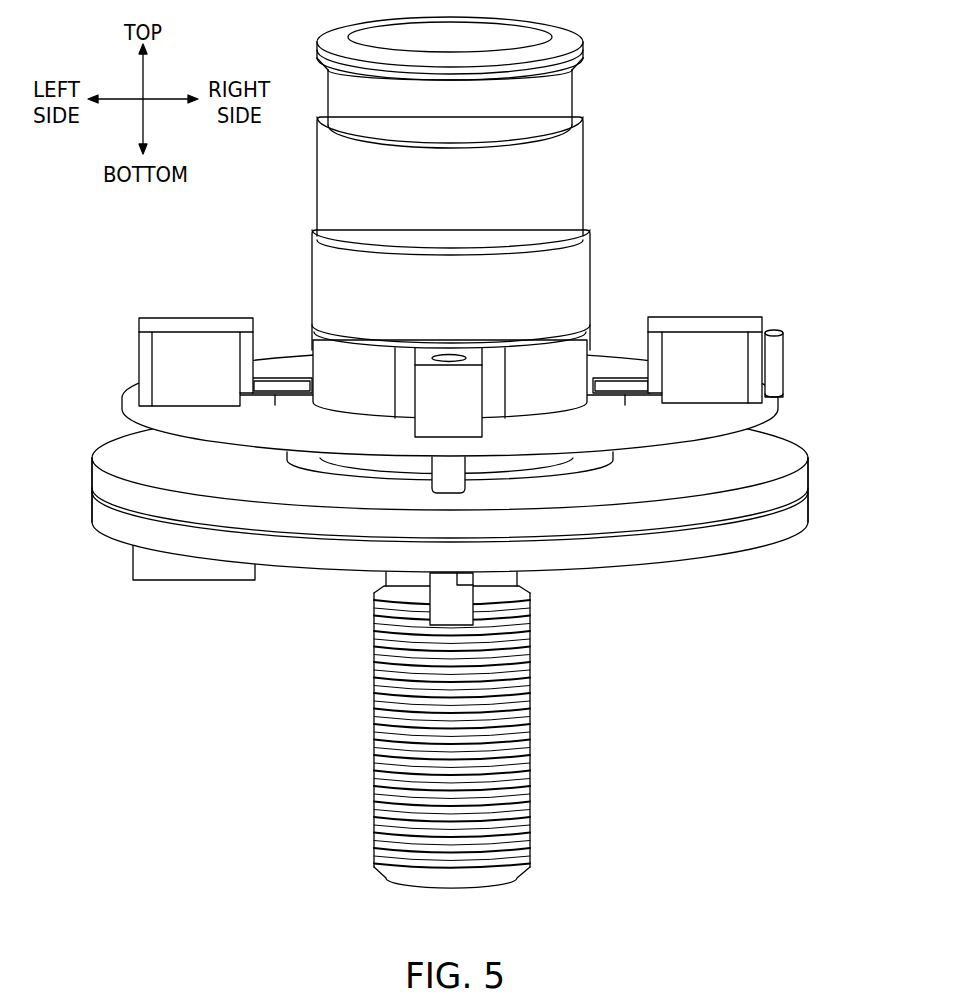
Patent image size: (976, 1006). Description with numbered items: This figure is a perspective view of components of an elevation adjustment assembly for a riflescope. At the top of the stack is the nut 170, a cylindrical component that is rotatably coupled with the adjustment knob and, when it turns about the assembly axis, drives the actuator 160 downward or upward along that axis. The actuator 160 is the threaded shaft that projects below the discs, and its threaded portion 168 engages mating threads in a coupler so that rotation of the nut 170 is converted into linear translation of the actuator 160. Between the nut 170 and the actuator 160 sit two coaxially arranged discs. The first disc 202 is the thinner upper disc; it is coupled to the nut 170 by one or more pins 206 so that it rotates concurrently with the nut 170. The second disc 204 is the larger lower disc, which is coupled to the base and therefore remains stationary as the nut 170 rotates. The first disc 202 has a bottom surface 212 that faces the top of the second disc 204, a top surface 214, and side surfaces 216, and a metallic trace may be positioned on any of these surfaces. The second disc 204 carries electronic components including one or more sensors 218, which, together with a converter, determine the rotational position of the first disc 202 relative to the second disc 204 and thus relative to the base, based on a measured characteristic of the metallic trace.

The actuator 160 is at (466, 730).
The threaded portion 168 is at (540, 778).
The nut 170 is at (548, 173).
The first disc 202 is at (796, 431).
The second disc 204 is at (444, 537).
The pins 206 is at (450, 480).
The bottom surface 212 is at (120, 508).
The top surface 214 is at (125, 460).
The side surfaces 216 is at (812, 488).
The sensors 218 is at (168, 567).